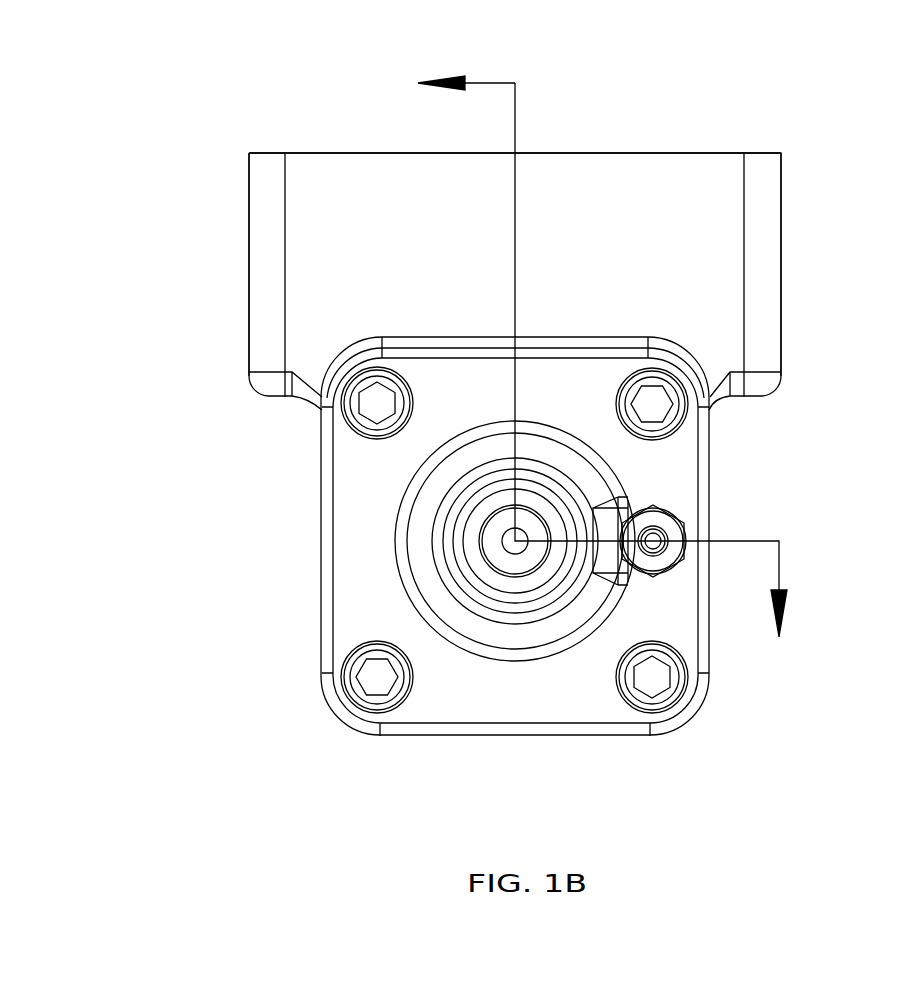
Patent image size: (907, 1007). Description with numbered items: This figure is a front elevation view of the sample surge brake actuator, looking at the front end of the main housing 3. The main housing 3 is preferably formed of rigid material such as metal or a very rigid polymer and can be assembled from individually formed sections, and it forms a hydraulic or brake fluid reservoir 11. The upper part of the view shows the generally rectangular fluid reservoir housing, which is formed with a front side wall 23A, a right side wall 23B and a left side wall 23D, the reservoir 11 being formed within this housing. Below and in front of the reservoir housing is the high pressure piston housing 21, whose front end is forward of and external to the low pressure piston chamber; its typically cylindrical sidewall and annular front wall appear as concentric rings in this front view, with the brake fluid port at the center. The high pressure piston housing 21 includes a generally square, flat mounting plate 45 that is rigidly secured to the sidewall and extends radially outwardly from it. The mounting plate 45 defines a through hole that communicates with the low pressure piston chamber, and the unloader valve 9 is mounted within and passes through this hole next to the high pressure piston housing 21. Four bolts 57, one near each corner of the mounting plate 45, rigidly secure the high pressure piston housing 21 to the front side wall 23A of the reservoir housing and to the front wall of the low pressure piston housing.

The fluid reservoir 11 is at (693, 98).
The main housing 3 is at (695, 278).
The front side wall 23A is at (590, 153).
The right side wall 23B is at (781, 162).
The left side wall 23D is at (246, 166).
The high pressure piston housing 21 is at (584, 702).
The mounting plate 45 is at (443, 702).
The unloader valve 9 is at (668, 526).
The bolts 57 is at (363, 673).